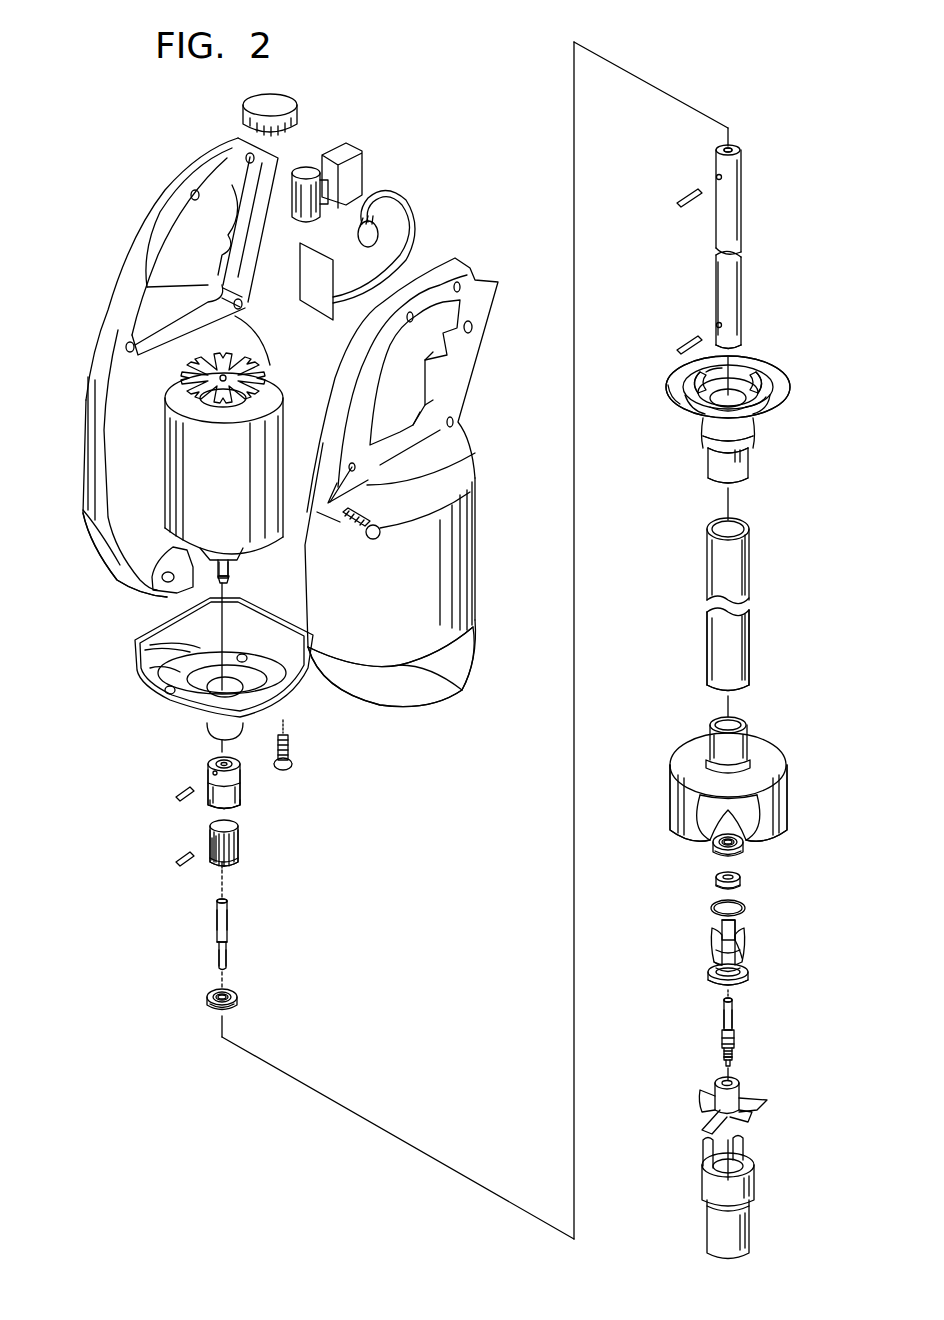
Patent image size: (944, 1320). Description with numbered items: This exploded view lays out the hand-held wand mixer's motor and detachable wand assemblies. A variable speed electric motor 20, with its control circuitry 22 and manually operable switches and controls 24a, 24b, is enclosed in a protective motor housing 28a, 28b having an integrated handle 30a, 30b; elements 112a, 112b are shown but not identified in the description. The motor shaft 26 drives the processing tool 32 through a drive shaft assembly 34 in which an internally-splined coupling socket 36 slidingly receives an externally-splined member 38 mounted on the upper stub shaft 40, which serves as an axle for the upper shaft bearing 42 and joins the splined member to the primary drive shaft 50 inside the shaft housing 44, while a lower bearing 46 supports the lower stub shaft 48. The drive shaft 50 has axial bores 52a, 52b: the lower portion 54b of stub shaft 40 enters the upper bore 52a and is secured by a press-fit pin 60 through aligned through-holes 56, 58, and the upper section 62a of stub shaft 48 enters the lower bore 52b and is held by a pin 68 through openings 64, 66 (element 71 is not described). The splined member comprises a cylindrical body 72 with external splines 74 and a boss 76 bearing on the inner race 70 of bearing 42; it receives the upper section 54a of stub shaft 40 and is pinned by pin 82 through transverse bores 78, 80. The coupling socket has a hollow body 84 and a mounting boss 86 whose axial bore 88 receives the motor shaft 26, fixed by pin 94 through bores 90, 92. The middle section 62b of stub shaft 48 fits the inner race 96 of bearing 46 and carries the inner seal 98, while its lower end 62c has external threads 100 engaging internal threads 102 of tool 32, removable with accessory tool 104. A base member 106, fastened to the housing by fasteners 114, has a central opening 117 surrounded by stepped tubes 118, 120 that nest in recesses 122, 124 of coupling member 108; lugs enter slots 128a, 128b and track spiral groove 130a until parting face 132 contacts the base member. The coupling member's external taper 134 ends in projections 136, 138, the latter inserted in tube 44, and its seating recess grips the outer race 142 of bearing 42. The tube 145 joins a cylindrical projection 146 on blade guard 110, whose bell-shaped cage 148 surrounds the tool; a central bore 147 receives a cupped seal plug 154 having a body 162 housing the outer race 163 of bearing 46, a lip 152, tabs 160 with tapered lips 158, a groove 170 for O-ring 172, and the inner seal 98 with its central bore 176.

The electric motor 20 is at (281, 370).
The control circuitry 22 is at (313, 300).
The switch/control 24a is at (297, 103).
The switch/control 24b is at (305, 168).
The motor shaft 26 is at (231, 582).
The motor housing half 28a is at (93, 386).
The motor housing half 28b is at (460, 560).
The handle portion 30a is at (222, 228).
The handle portion 30b is at (440, 378).
The processing tool 32 is at (693, 1111).
The drive shaft assembly 34 is at (752, 198).
The coupling socket 36 is at (252, 800).
The externally-splined member 38 is at (248, 867).
The upper stub shaft 40 is at (207, 937).
The upper shaft bearing 42 is at (202, 1008).
The shaft housing 44 is at (760, 568).
The lower bearing 46 is at (702, 855).
The lower stub shaft 48 is at (700, 1030).
The primary drive shaft 50 is at (736, 232).
The upper bore 52a is at (722, 150).
The lower bore 52b is at (742, 352).
The upper section of stub shaft 54a is at (228, 922).
The lower portion of stub shaft 54b is at (227, 965).
The transverse through-hole 56 is at (221, 965).
The through-hole 58 is at (716, 176).
The press-fit pin 60 is at (680, 192).
The upper section of lower stub shaft 62a is at (736, 1012).
The middle section of lower stub shaft 62b is at (736, 1038).
The lower end of lower stub shaft 62c is at (736, 1058).
The opening 64 is at (722, 1010).
The opening 66 is at (717, 323).
The pin 68 is at (682, 343).
The inner race 70 is at (236, 995).
The shaft shoulder 71 is at (228, 944).
The cylindrical body 72 is at (239, 828).
The external splines 74 is at (205, 865).
The cylindrical boss 76 is at (226, 868).
The transverse bore 78 is at (217, 905).
The transverse bore 80 is at (210, 835).
The press-fit pin 82 is at (180, 853).
The hollow cylindrical body 84 is at (241, 806).
The mounting boss 86 is at (240, 778).
The axial bore 88 is at (212, 758).
The transverse bore 90 is at (213, 774).
The transverse bore 92 is at (231, 567).
The press fit pin 94 is at (180, 797).
The inner race 96 is at (742, 840).
The inner seal 98 is at (702, 883).
The external threads 100 is at (722, 1052).
The internal threads 102 is at (724, 1076).
The accessory tool 104 is at (712, 1220).
The base member 106 is at (125, 702).
The coupling member 108 is at (772, 449).
The blade guard 110 is at (797, 757).
The housing lower portion 112a is at (103, 562).
The housing lower portion 112b is at (424, 683).
The mechanical fasteners 114 is at (291, 756).
The central opening 117 is at (150, 675).
The first stepped tube 118 is at (170, 653).
The second stepped tube 120 is at (210, 731).
The first stepped recess 122 is at (770, 386).
The second stepped recess 124 is at (770, 420).
The slot 128a is at (756, 366).
The slot 128b is at (700, 418).
The spiral groove 130a is at (702, 368).
The parting face 132 is at (670, 392).
The external taper 134 is at (703, 440).
The upper projection 136 is at (710, 457).
The lower projection 138 is at (714, 473).
The outer race 142 is at (234, 1008).
The tube 145 is at (741, 646).
The cylindrical projection 146 is at (742, 748).
The central bore 147 is at (744, 713).
The cage 148 is at (768, 812).
The lip 152 is at (749, 982).
The seal plug 154 is at (696, 944).
The tapered lip 158 is at (742, 935).
The coupling tabs 160 is at (740, 950).
The cylindrical body 162 is at (746, 972).
The outer race 163 is at (740, 855).
The concentric groove 170 is at (712, 970).
The O-ring 172 is at (710, 908).
The central bore 176 is at (739, 880).